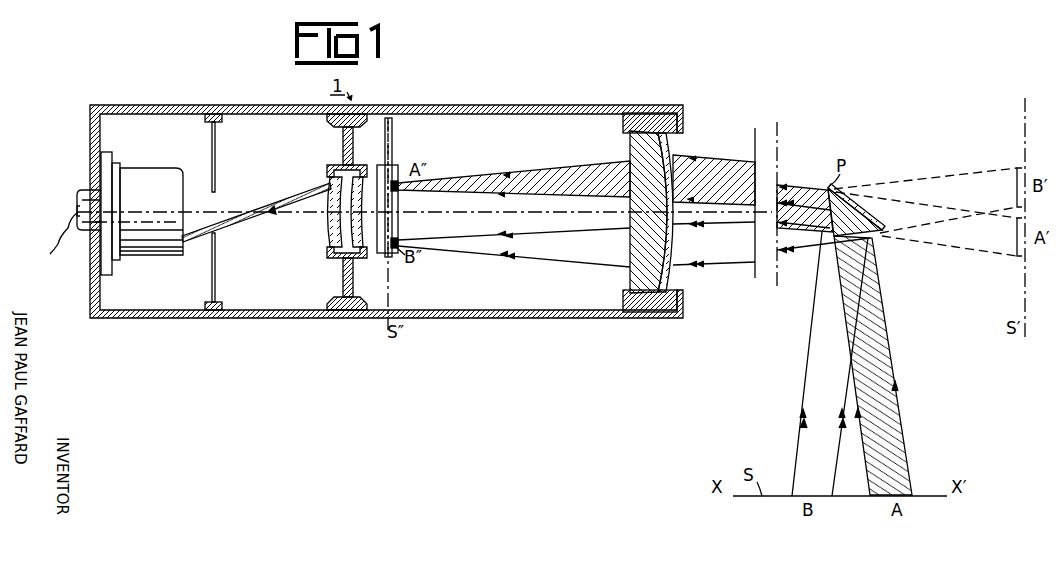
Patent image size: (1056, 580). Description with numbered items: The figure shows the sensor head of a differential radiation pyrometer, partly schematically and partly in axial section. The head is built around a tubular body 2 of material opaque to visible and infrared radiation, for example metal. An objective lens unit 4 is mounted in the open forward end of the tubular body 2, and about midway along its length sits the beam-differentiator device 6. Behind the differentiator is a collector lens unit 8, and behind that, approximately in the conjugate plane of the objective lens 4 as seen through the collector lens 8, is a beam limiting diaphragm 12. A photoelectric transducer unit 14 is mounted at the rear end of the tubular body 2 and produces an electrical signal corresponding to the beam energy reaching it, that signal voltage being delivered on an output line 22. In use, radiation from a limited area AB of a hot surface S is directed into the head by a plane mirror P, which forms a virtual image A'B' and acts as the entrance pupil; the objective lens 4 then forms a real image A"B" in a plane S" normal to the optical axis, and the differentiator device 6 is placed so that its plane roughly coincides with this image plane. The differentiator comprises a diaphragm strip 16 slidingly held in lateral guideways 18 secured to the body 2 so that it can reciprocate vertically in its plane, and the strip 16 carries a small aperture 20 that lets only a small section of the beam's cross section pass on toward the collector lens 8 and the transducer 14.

The tubular body 2 is at (237, 105).
The objective lens unit 4 is at (679, 128).
The beam-differentiator device 6 is at (397, 116).
The collector lens unit 8 is at (328, 170).
The beam limiting diaphragm 12 is at (216, 132).
The photoelectric transducer unit 14 is at (156, 178).
The diaphragm strip 16 is at (393, 136).
The lateral guideways 18 is at (398, 205).
The aperture 20 is at (399, 168).
The output line 22 is at (74, 211).